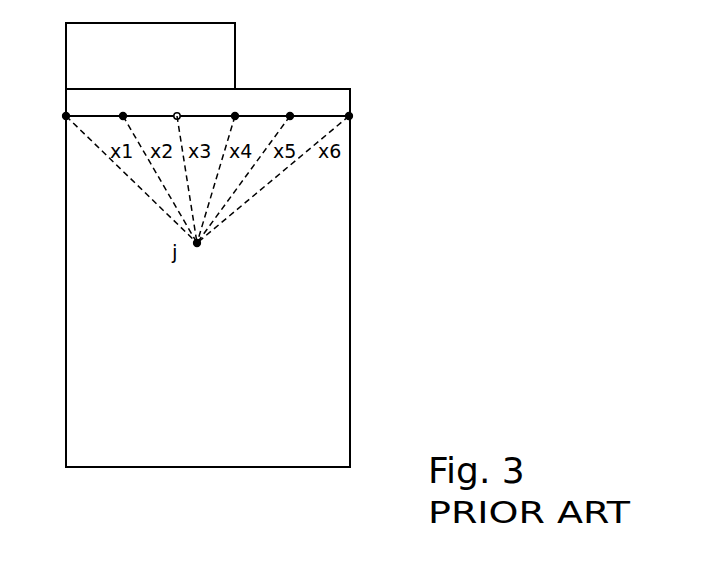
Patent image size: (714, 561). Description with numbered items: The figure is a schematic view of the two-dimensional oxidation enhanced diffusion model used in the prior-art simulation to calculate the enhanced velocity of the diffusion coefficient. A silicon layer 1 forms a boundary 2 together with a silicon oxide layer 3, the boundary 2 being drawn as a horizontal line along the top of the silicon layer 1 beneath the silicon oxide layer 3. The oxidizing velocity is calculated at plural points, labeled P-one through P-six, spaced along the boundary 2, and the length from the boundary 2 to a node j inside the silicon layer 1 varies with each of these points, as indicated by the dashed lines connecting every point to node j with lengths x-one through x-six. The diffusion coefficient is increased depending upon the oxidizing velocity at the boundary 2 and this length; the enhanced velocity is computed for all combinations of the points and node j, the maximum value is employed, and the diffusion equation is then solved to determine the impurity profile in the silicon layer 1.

The silicon layer 1 is at (340, 322).
The boundary 2 is at (327, 116).
The silicon oxide layer 3 is at (313, 96).